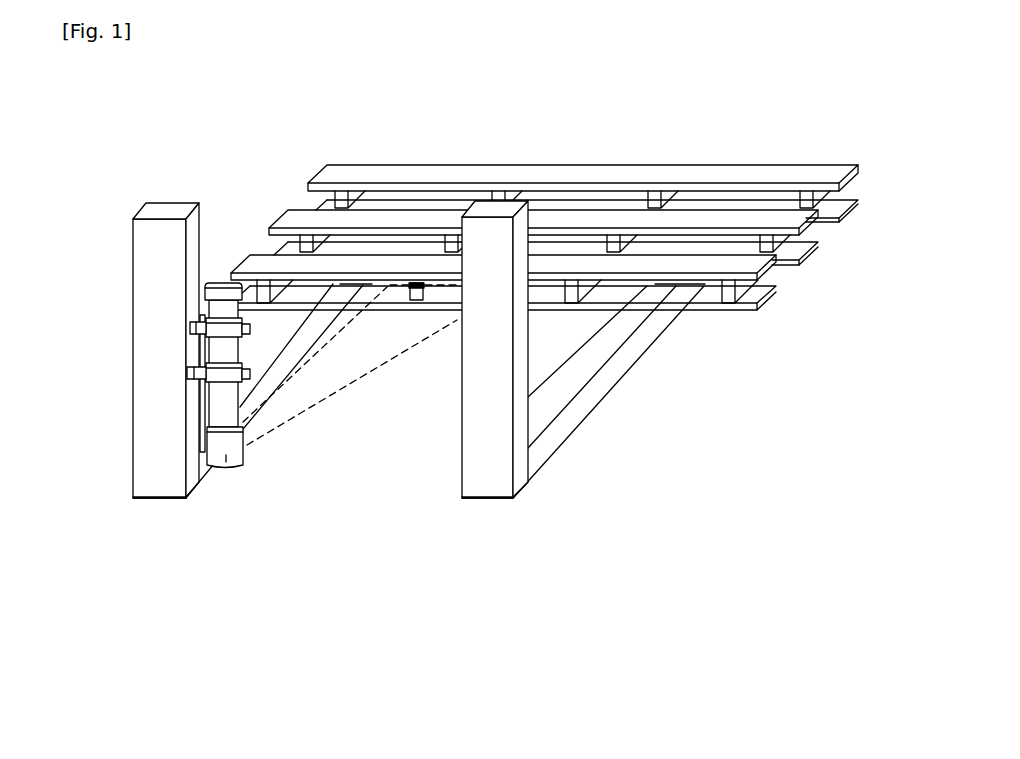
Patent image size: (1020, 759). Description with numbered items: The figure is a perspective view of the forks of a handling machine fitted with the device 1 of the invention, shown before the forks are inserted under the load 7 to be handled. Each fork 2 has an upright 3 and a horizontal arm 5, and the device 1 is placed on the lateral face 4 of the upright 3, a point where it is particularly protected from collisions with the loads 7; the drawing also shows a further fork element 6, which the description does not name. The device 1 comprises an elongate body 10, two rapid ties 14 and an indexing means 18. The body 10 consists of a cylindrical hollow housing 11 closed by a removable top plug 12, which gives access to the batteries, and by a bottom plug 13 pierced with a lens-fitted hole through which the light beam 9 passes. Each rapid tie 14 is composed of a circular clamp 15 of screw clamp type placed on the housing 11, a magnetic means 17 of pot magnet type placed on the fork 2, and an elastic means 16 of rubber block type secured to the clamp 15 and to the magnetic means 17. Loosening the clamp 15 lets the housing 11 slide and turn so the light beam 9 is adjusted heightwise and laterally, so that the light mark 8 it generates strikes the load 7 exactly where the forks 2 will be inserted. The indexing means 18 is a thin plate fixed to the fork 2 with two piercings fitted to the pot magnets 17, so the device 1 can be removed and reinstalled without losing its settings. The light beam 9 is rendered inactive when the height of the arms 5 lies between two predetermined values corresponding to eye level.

The device 1 is at (275, 411).
The fork 2 is at (116, 480).
The upright 3 is at (177, 478).
The lateral face 4 is at (132, 222).
The arm 5 is at (295, 370).
The beam 6 is at (357, 285).
The load 7 is at (547, 175).
The light mark 8 is at (415, 283).
The light beam 9 is at (368, 355).
The body 10 is at (278, 444).
The cylindrical hollow housing 11 is at (225, 397).
The top plug 12 is at (222, 281).
The bottom plug 13 is at (259, 474).
The rapid tie 14 is at (200, 352).
The circular clamp 15 is at (210, 373).
The elastic means 16 is at (188, 374).
The magnetic means 17 is at (185, 358).
The indexing means 18 is at (188, 307).